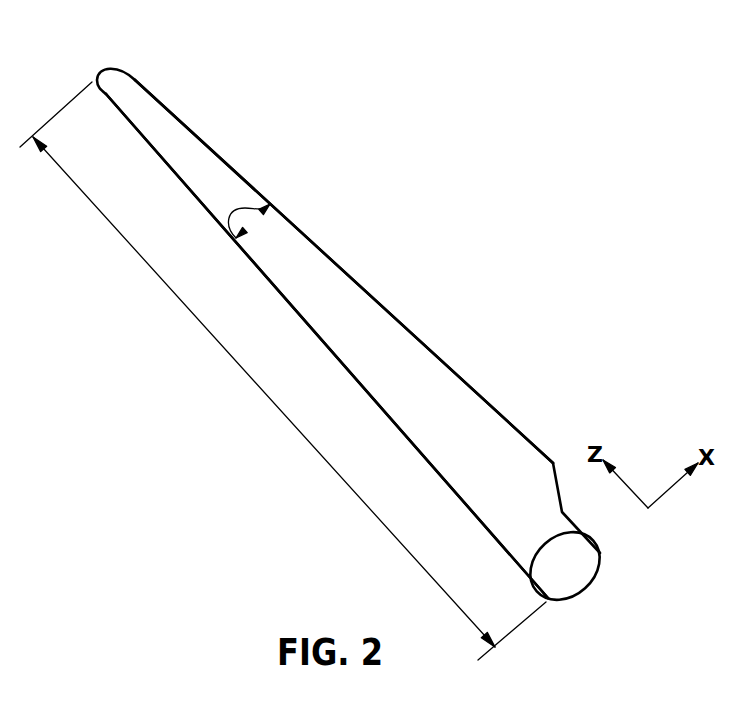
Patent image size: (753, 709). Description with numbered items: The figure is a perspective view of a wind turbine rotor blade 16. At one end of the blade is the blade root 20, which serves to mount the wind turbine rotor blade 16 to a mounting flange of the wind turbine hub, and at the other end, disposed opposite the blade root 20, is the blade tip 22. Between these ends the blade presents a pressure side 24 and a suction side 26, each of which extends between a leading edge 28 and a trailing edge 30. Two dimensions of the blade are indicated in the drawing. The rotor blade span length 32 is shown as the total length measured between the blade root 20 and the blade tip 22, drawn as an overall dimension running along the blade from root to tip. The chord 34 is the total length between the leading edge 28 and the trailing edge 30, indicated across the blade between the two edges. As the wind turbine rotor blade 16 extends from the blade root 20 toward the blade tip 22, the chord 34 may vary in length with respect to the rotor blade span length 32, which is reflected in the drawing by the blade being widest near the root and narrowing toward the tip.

The wind turbine rotor blade 16 is at (365, 318).
The blade root 20 is at (568, 557).
The blade tip 22 is at (101, 70).
The pressure side 24 is at (442, 433).
The suction side 26 is at (363, 308).
The leading edge 28 is at (298, 314).
The trailing edge 30 is at (226, 156).
The rotor blade span length 32 is at (218, 343).
The chord 34 is at (228, 220).